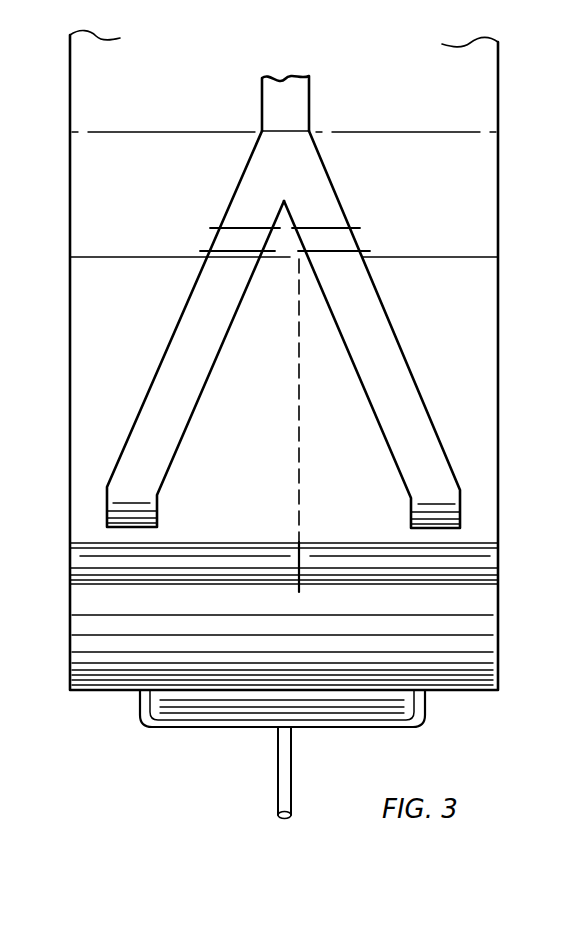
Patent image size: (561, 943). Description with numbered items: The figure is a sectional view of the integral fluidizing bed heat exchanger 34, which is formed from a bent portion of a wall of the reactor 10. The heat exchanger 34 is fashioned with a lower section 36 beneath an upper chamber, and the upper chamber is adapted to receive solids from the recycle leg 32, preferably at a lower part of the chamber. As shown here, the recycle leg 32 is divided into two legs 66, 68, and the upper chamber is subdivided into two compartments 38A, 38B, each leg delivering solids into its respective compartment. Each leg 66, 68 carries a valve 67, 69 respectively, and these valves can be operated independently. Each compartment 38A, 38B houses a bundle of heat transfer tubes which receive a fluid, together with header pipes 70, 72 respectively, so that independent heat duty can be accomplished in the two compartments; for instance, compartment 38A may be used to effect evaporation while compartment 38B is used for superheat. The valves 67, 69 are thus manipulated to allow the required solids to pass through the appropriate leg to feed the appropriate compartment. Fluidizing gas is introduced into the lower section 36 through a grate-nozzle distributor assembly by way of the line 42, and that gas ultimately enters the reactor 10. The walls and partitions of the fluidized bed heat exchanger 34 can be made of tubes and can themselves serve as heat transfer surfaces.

The reactor 10 is at (76, 98).
The recycle leg 32 is at (306, 100).
The fluidizing bed heat exchanger 34 is at (136, 132).
The lower section 36 is at (483, 647).
The compartment 38A is at (153, 317).
The compartment 38B is at (471, 322).
The line 42 is at (291, 762).
The leg 66 is at (196, 388).
The valve 67 is at (216, 236).
The leg 68 is at (400, 359).
The valve 69 is at (348, 241).
The header pipe 70 is at (100, 560).
The header pipe 72 is at (432, 562).